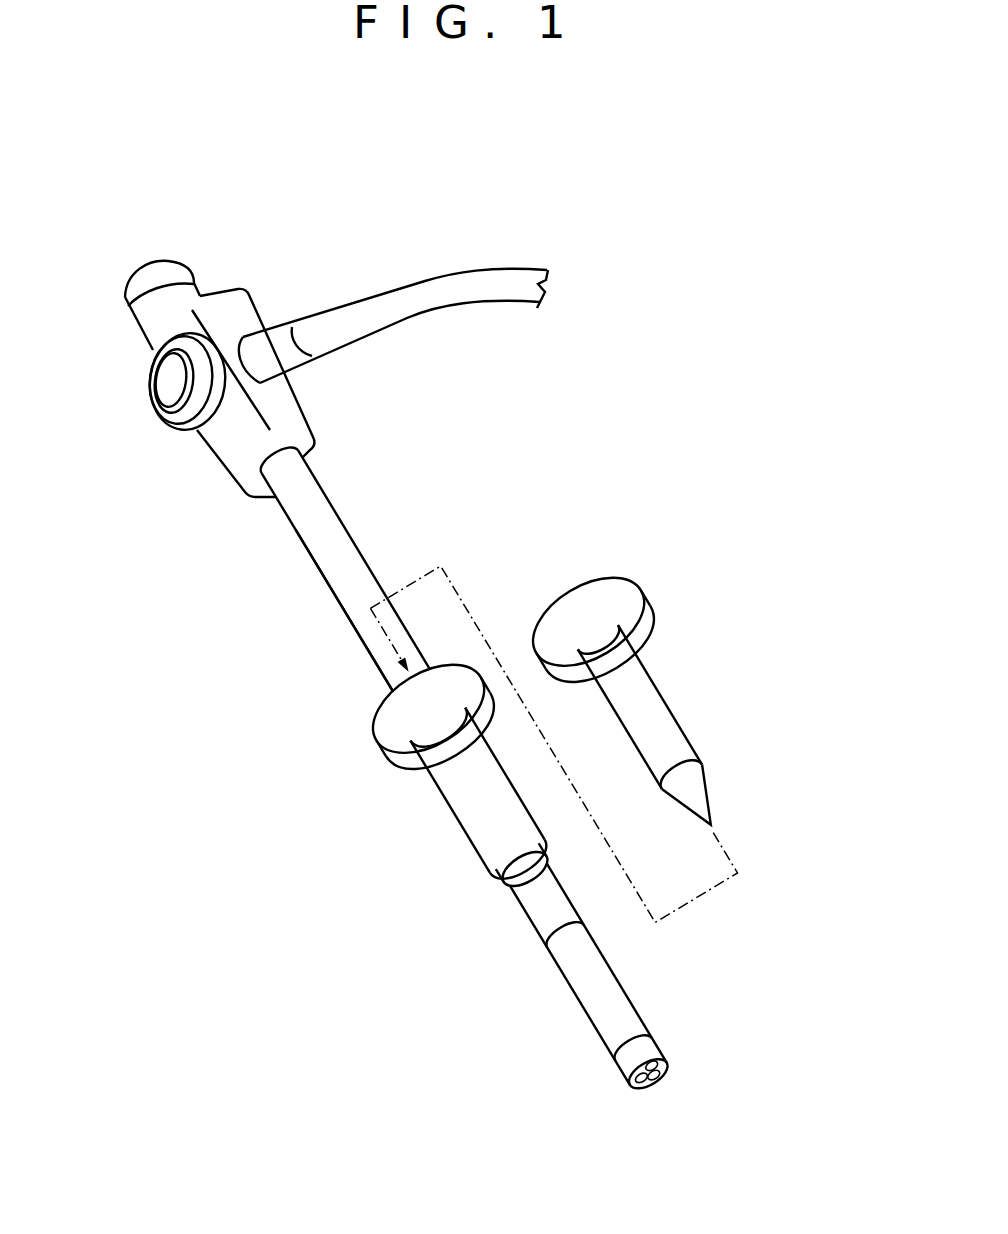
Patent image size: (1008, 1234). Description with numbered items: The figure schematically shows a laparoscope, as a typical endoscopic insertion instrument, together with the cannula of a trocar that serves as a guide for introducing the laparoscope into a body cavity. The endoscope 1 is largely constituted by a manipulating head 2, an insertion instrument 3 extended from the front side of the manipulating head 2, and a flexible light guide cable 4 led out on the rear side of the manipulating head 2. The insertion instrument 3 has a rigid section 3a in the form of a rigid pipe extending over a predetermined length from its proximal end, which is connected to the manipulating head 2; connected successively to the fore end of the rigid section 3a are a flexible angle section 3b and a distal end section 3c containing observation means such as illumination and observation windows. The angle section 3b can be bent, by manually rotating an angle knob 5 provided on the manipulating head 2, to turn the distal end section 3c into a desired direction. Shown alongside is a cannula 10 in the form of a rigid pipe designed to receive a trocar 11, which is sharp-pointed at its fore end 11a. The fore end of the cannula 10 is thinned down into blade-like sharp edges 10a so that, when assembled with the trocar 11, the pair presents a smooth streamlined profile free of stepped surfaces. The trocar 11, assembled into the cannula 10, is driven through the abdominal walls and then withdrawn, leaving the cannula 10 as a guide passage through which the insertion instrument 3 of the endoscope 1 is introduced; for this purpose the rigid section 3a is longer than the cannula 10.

The endoscope 1 is at (323, 417).
The manipulating head 2 is at (245, 470).
The insertion instrument 3 is at (310, 557).
The rigid section 3a is at (365, 632).
The flexible angle section 3b is at (603, 1025).
The distal end section 3c is at (643, 1053).
The flexible light guide cable 4 is at (465, 285).
The angle knob 5 is at (167, 400).
The cannula 10 is at (455, 813).
The blade-like sharp edges 10a is at (513, 853).
The trocar 11 is at (642, 657).
The sharp-pointed fore end 11a is at (701, 789).